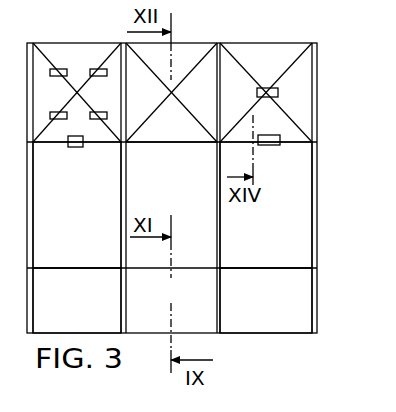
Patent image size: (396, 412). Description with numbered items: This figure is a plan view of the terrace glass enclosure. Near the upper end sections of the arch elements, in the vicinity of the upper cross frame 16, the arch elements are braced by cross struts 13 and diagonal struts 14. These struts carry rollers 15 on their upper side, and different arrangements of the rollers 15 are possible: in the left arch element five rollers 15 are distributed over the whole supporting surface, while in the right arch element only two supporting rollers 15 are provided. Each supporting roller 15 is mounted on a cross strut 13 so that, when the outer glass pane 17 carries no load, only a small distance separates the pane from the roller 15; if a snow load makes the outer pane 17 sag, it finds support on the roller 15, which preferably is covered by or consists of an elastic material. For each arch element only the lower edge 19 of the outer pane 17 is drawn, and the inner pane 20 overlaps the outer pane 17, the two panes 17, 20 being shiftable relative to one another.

The cross strut 13 is at (172, 142).
The diagonal strut 14 is at (171, 93).
The supporting roller 15 is at (95, 69).
The upper cross frame 16 is at (258, 43).
The outer glass pane 17 is at (90, 217).
The lower edge 19 is at (78, 270).
The inner pane 20 is at (288, 311).